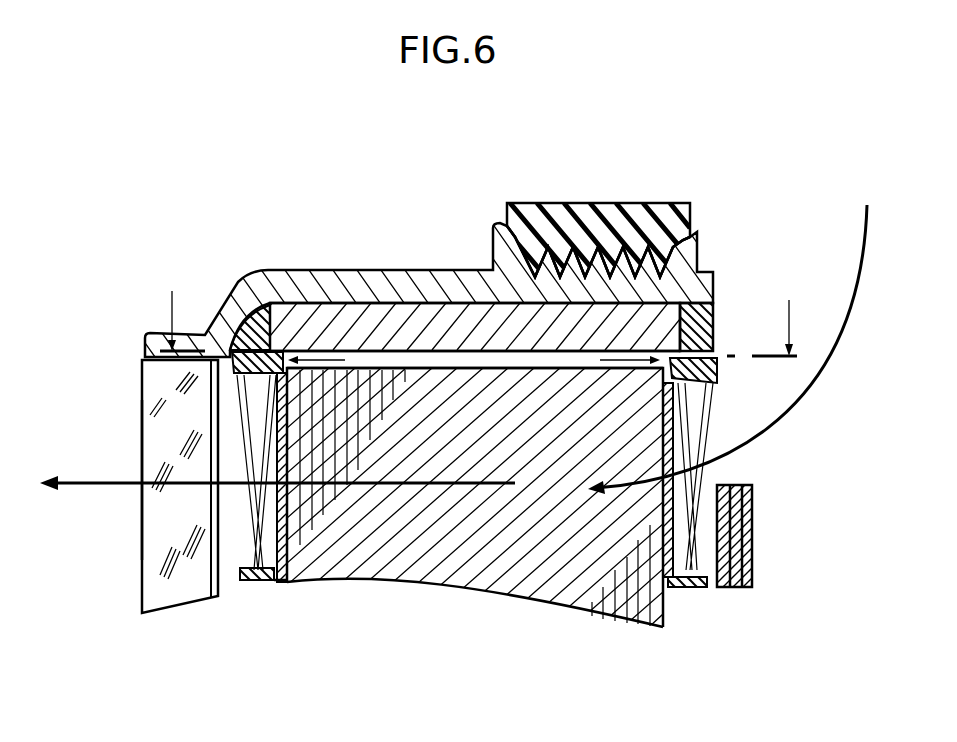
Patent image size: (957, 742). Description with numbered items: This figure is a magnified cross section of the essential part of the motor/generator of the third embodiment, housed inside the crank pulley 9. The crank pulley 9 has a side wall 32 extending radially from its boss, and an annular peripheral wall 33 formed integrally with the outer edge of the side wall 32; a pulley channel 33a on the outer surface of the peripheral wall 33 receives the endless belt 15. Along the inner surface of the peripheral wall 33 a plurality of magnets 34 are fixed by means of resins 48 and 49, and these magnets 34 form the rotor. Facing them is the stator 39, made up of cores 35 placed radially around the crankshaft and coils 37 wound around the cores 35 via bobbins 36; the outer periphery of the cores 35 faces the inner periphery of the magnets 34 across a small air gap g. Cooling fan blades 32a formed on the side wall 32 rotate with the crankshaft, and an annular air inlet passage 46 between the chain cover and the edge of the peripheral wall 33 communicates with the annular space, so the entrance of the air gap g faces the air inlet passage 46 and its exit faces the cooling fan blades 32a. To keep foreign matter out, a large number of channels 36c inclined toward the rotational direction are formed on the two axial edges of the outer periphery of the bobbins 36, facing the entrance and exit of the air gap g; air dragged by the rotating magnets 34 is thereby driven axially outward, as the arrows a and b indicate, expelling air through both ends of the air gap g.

The crank pulley 9 is at (322, 236).
The endless belt 15 is at (627, 210).
The side wall 32 is at (138, 403).
The cooling fan blades 32a is at (148, 527).
The peripheral wall 33 is at (356, 268).
The pulley channel 33a is at (548, 262).
The magnets 34 is at (430, 325).
The cores 35 is at (463, 578).
The bobbins 36 is at (264, 598).
The channels 36c is at (262, 308).
The coils 37 is at (257, 518).
The stator 39 is at (501, 612).
The air inlet passage 46 is at (763, 268).
The resin 48 is at (697, 376).
The resin 49 is at (247, 350).
The air gap g is at (463, 360).